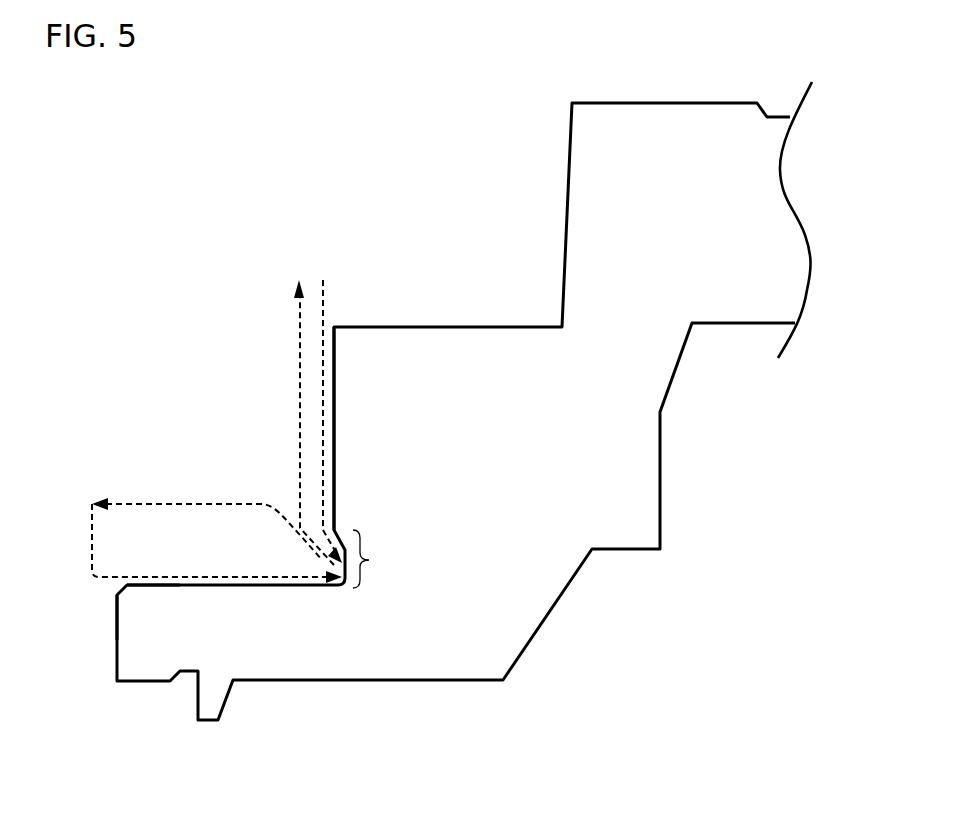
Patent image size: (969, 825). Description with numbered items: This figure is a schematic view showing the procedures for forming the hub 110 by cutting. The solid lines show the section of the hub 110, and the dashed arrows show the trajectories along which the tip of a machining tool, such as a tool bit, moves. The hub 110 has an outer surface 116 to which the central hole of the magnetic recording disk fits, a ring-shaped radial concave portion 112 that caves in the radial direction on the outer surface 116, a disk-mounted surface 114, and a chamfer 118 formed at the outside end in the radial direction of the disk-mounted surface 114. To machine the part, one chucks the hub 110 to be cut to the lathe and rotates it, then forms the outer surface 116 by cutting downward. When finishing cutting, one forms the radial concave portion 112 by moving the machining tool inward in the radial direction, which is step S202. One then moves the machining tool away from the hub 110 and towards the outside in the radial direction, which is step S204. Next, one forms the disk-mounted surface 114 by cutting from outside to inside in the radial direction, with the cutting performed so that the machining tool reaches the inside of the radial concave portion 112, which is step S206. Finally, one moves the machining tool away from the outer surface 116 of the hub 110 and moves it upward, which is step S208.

The hub 110 is at (767, 205).
The radial concave portion 112 is at (369, 560).
The disk-mounted surface 114 is at (175, 580).
The outer surface 116 is at (333, 472).
The chamfer 118 is at (119, 596).
The step of forming the radial concave portion S202 is at (325, 308).
The step of moving the machining tool outward S204 is at (177, 503).
The step of forming the disk-mounted surface S206 is at (108, 577).
The step of moving the machining tool upward S208 is at (295, 308).